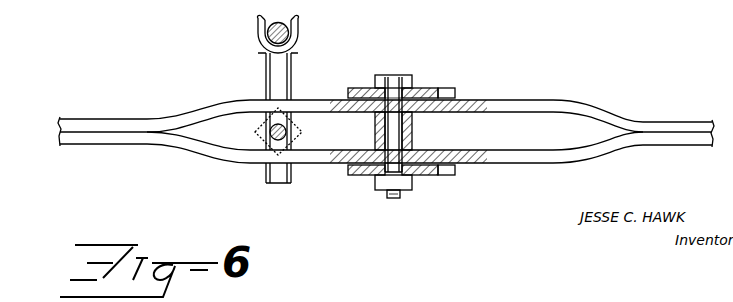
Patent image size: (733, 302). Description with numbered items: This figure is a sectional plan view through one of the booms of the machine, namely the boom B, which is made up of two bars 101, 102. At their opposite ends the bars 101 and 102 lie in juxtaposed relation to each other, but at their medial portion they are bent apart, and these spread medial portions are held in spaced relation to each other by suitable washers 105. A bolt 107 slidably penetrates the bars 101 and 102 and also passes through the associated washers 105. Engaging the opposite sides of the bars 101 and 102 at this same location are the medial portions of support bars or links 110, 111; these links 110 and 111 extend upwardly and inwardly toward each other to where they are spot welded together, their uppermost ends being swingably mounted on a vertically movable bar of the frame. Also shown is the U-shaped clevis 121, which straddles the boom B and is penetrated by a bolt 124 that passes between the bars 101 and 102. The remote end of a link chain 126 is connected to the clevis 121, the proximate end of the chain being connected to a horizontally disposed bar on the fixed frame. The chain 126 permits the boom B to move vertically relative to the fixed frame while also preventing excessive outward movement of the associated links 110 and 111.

The boom B is at (203, 161).
The bar 101 is at (510, 160).
The bar 102 is at (552, 101).
The washer 105 is at (412, 126).
The bolt 107 is at (394, 198).
The support bar or link 110 is at (423, 175).
The support bar or link 111 is at (436, 88).
The U-shaped clevis 121 is at (292, 63).
The bolt 124 is at (268, 132).
The link chain 126 is at (298, 32).